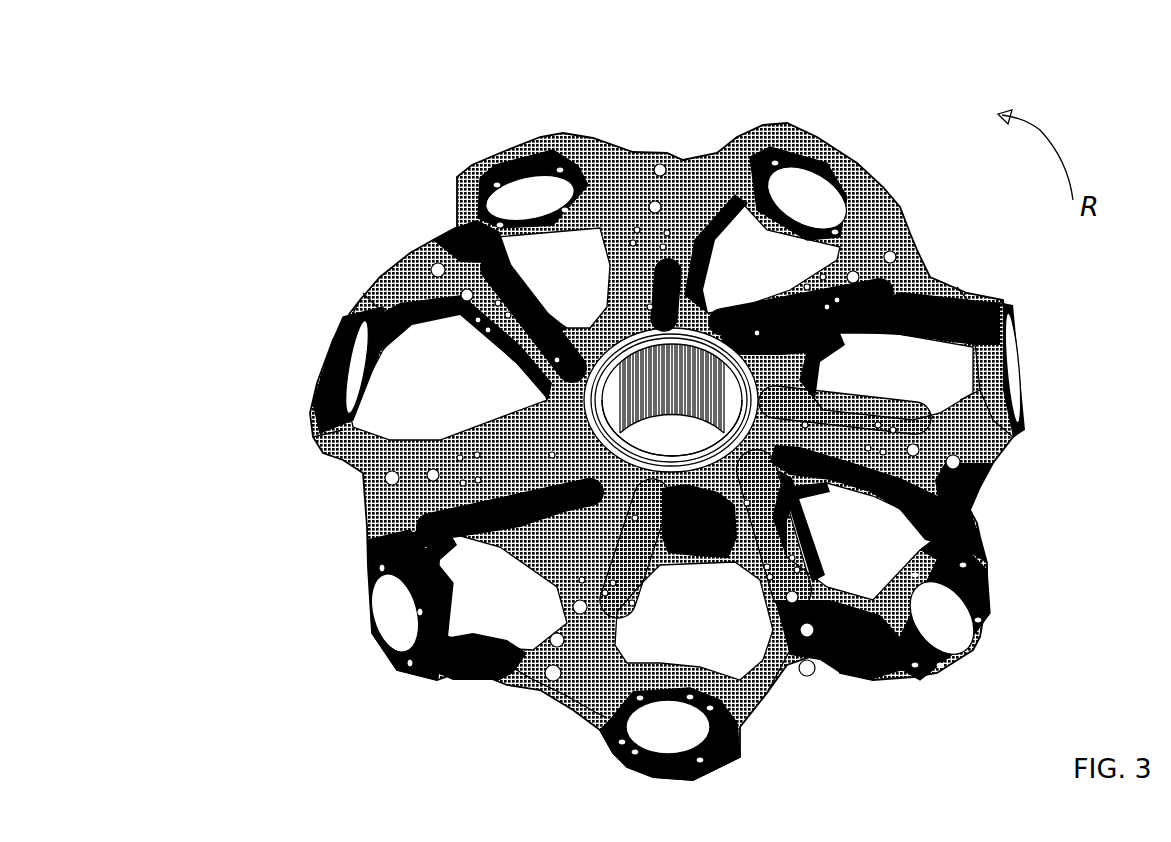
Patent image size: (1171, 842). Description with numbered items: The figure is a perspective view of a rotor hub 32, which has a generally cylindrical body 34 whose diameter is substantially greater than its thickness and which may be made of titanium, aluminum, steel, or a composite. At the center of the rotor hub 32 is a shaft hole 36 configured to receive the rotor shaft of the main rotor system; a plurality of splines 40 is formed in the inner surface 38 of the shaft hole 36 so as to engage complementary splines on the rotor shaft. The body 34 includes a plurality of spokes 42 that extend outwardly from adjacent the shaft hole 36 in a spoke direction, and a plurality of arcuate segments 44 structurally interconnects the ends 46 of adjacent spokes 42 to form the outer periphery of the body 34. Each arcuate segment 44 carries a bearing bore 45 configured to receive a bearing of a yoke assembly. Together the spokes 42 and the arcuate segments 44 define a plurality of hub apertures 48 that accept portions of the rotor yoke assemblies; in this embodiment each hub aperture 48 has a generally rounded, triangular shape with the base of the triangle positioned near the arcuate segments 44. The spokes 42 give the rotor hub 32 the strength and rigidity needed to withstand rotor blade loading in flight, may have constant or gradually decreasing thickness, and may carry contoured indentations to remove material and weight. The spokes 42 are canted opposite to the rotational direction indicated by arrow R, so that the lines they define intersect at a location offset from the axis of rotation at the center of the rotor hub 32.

The rotor hub 32 is at (289, 84).
The body 34 is at (500, 675).
The shaft hole 36 is at (685, 439).
The inner surface 38 is at (750, 378).
The splines 40 is at (690, 377).
The spokes 42 is at (497, 367).
The arcuate segments 44 is at (340, 352).
The bearing bore 45 is at (392, 617).
The ends 46 is at (382, 488).
The hub apertures 48 is at (947, 380).